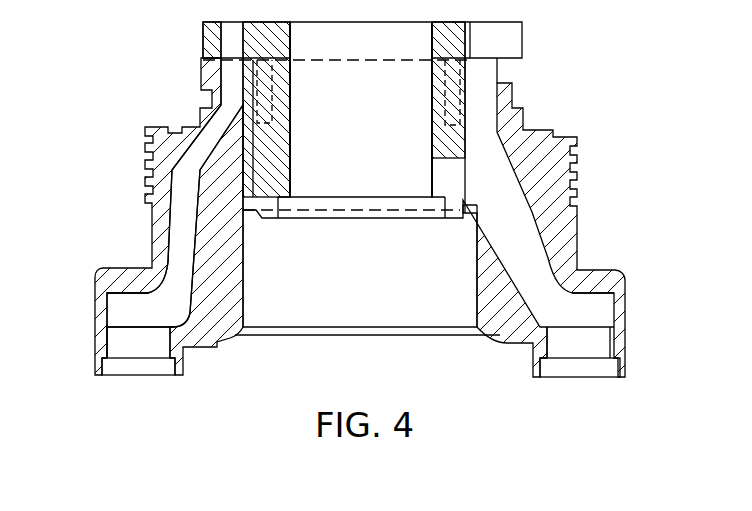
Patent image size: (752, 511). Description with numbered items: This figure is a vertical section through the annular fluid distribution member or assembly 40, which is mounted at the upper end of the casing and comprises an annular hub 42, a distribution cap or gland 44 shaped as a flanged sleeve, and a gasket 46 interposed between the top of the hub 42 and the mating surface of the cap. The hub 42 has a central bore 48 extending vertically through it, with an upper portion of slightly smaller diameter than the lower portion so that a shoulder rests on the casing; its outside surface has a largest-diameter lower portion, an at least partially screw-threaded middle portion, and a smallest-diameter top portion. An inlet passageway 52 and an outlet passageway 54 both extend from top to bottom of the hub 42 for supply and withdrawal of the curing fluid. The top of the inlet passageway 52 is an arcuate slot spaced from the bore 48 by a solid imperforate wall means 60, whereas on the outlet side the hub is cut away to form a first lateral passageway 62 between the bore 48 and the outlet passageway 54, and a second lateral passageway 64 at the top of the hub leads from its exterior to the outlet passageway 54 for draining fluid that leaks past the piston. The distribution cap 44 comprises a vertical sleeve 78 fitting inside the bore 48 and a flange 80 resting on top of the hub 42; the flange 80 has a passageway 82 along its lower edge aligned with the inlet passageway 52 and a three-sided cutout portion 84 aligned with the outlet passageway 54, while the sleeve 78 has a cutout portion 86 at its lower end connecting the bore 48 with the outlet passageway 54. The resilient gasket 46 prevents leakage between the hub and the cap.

The fluid distribution member or assembly 40 is at (588, 128).
The hub 42 is at (160, 247).
The distribution cap 44 is at (283, 47).
The gasket 46 is at (205, 62).
The central bore 48 is at (244, 282).
The inlet passageway 52 is at (112, 320).
The outlet passageway 54 is at (604, 316).
The wall means 60 is at (262, 106).
The first lateral passageway 62 is at (487, 157).
The second lateral passageway 64 is at (512, 73).
The sleeve 78 is at (282, 168).
The flange 80 is at (210, 40).
The passageway 82 is at (227, 49).
The cutout portion 84 is at (512, 46).
The cutout portion 86 is at (456, 200).